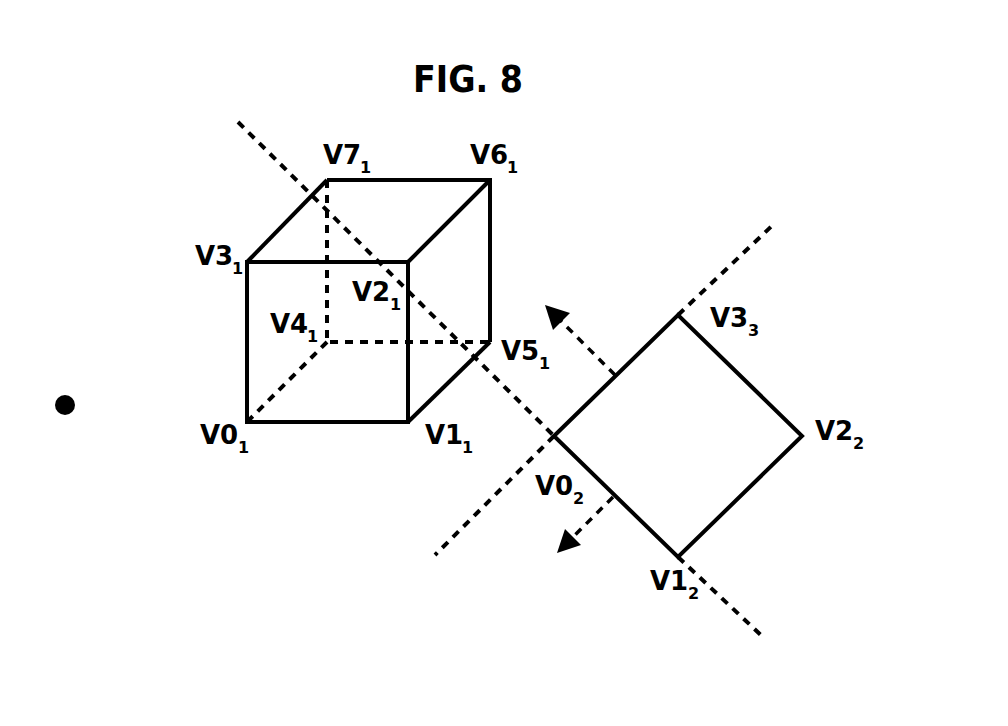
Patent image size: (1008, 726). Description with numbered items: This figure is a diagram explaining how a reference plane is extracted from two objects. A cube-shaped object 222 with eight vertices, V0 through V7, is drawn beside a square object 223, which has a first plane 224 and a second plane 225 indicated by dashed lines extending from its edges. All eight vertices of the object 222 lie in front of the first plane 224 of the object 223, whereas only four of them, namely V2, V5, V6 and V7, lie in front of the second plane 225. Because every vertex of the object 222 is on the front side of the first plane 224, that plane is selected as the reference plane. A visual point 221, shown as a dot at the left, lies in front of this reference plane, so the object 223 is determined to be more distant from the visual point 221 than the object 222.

The visual point 221 is at (68, 414).
The object 222 is at (247, 352).
The object 223 is at (742, 493).
The first plane 224 is at (776, 224).
The second plane 225 is at (762, 638).